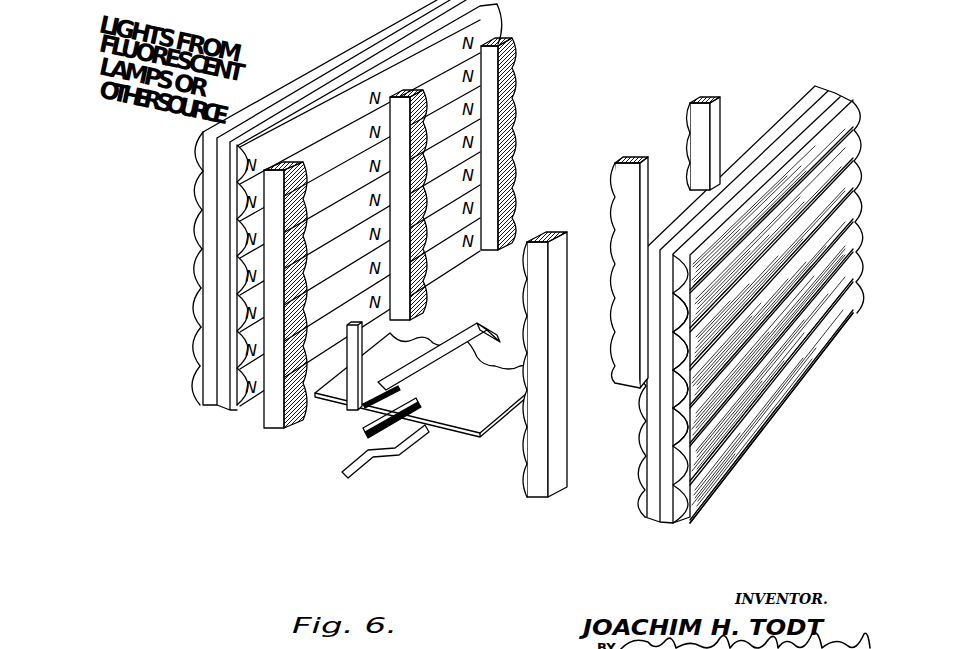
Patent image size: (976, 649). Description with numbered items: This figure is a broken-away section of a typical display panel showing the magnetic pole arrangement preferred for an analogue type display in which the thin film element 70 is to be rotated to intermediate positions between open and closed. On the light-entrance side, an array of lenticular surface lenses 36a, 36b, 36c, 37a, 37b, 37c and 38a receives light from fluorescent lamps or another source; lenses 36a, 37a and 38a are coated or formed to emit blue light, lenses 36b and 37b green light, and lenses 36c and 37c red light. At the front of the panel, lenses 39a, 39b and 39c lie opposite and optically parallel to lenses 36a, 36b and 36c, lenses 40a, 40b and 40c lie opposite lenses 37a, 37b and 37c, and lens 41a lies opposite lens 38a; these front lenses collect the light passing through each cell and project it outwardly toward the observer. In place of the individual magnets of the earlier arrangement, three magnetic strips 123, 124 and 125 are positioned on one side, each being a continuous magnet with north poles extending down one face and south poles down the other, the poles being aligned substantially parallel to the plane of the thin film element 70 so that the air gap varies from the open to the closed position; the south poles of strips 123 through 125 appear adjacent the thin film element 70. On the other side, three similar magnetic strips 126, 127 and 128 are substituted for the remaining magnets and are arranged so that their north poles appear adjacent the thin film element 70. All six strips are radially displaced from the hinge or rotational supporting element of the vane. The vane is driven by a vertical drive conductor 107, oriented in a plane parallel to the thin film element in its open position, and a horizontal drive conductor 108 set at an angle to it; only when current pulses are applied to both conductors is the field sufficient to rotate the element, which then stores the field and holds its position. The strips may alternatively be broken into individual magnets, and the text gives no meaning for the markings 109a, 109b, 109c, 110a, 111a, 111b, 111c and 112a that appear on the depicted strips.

The lenticular surface lens 36a is at (197, 162).
The lenticular surface lens 36b is at (197, 201).
The lenticular surface lens 36c is at (197, 242).
The lenticular surface lens 37a is at (197, 279).
The lenticular surface lens 37b is at (197, 312).
The lenticular surface lens 37c is at (197, 349).
The lenticular surface lens 38a is at (197, 398).
The lenticular surface lens 39a is at (828, 148).
The lenticular surface lens 39b is at (818, 188).
The lenticular surface lens 39c is at (816, 223).
The lenticular surface lens 40a is at (814, 258).
The lenticular surface lens 40b is at (816, 293).
The lenticular surface lens 40c is at (820, 325).
The lenticular surface lens 41a is at (825, 352).
The thin film element 70 is at (468, 422).
The vertical drive conductor 107 is at (350, 413).
The horizontal drive conductor 108 is at (368, 472).
The magnetic plate 109a is at (353, 114).
The magnetic plate 109b is at (369, 142).
The magnetic plate 109c is at (371, 177).
The magnetic plate 110a is at (368, 212).
The magnetic plate 111a is at (647, 266).
The magnetic plate 111b is at (647, 300).
The magnetic plate 111c is at (647, 333).
The magnetic plate 112a is at (647, 375).
The magnetic strip 123 is at (283, 432).
The magnetic strip 124 is at (422, 303).
The magnetic strip 125 is at (507, 227).
The magnetic strip 126 is at (542, 495).
The magnetic strip 127 is at (634, 155).
The magnetic strip 128 is at (713, 98).